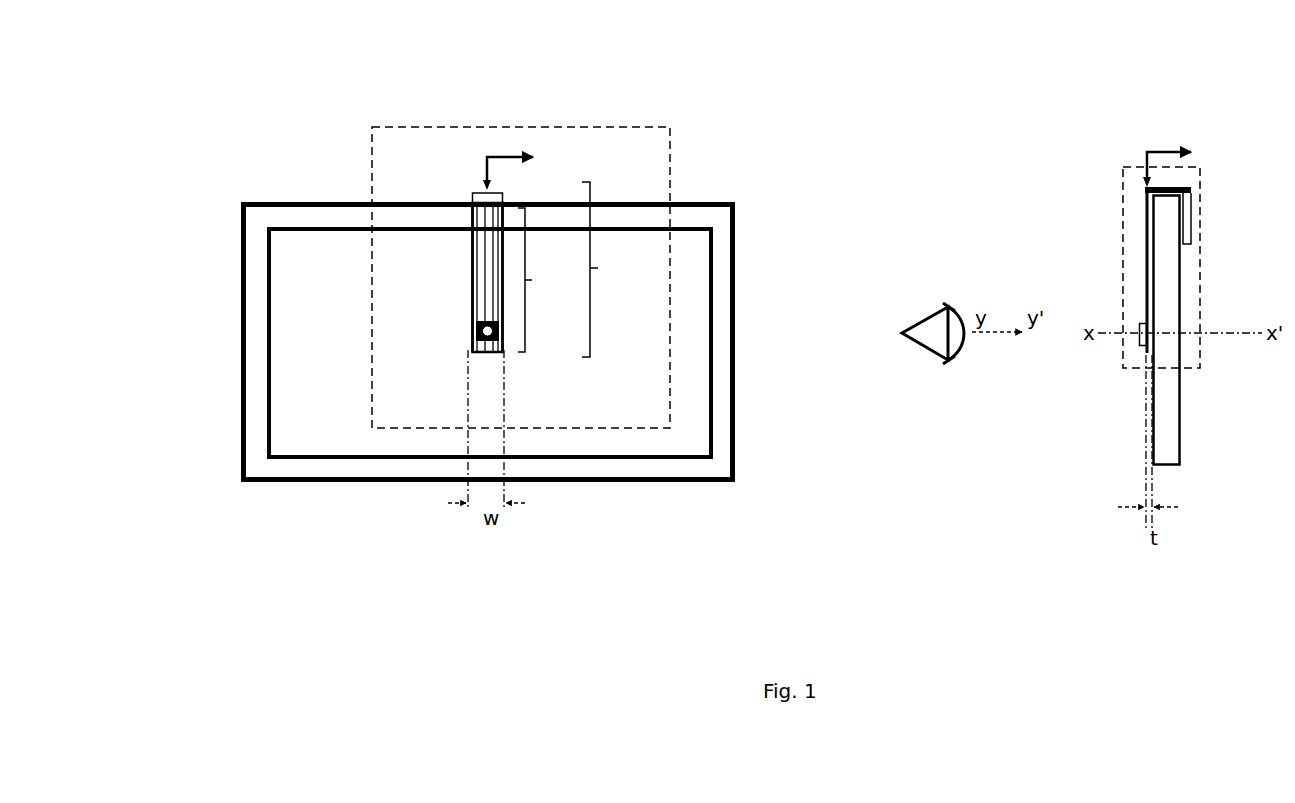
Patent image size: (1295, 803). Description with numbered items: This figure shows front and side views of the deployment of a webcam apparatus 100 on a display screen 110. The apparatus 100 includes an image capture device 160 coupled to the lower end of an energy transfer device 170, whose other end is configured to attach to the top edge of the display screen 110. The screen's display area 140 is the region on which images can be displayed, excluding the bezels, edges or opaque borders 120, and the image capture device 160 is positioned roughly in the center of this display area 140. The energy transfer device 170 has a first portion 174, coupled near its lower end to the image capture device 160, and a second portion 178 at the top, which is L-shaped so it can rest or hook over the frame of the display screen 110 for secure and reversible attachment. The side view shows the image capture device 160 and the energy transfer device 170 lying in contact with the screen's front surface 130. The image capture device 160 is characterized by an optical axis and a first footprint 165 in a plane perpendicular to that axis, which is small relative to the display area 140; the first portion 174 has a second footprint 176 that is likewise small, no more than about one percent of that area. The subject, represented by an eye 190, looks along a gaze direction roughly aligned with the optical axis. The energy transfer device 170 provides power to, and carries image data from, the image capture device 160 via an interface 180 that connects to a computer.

The apparatus 100 is at (418, 125).
The display screen 110 is at (252, 202).
The bezels, edges or opaque borders 120 is at (310, 218).
The front surface 130 is at (355, 245).
The display area 140 is at (267, 305).
The image capture device 160 is at (485, 355).
The first footprint 165 is at (477, 340).
The energy transfer device 170 is at (552, 269).
The first portion 174 is at (1146, 262).
The second footprint 176 is at (479, 284).
The second portion 178 is at (508, 197).
The interface 180 is at (863, 168).
The eye 190 is at (945, 358).